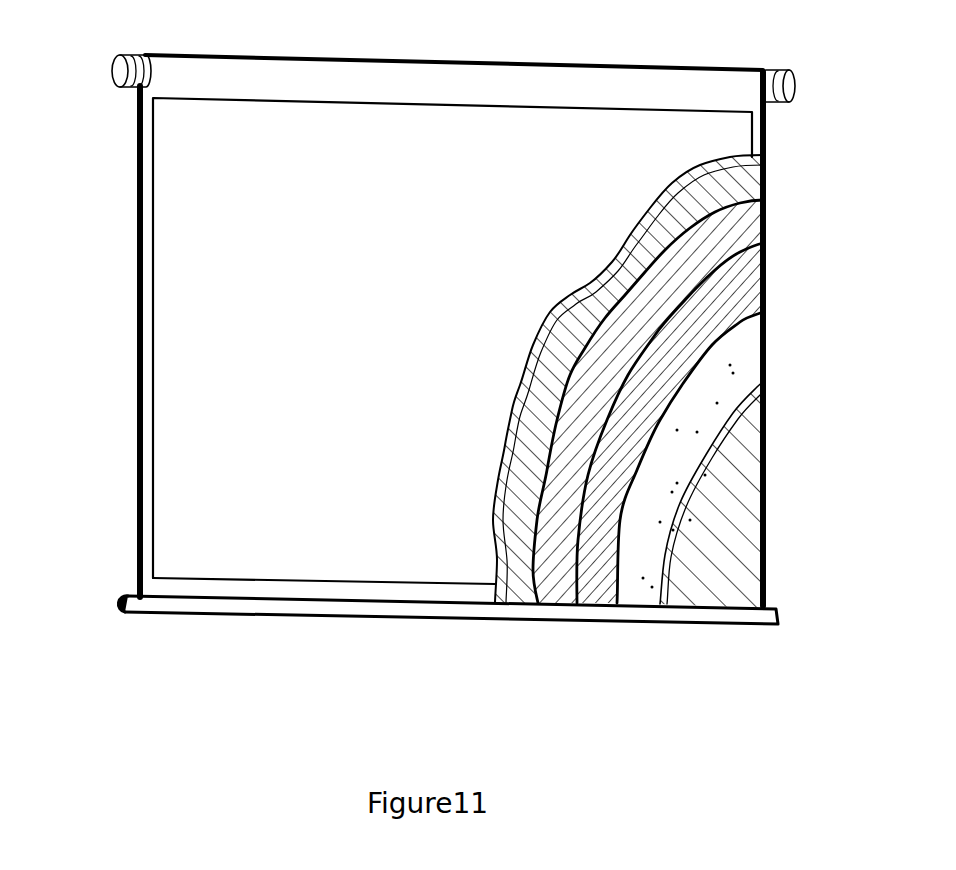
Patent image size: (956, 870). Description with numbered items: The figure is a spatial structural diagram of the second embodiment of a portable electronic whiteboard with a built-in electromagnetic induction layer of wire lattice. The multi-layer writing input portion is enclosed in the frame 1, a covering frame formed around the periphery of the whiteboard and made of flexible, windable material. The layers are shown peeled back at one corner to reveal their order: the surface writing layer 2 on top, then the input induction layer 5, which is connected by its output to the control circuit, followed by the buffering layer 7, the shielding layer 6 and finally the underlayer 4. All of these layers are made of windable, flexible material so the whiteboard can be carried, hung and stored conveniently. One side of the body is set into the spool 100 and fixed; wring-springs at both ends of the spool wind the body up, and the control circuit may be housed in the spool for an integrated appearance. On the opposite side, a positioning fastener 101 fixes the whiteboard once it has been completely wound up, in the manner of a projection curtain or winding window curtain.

The frame 1 is at (145, 345).
The spool 100 is at (792, 83).
The positioning fastener 101 is at (466, 615).
The surface writing layer 2 is at (770, 146).
The input induction layer 5 is at (766, 220).
The buffering layer 7 is at (766, 307).
The shielding layer 6 is at (712, 393).
The underlayer 4 is at (766, 508).